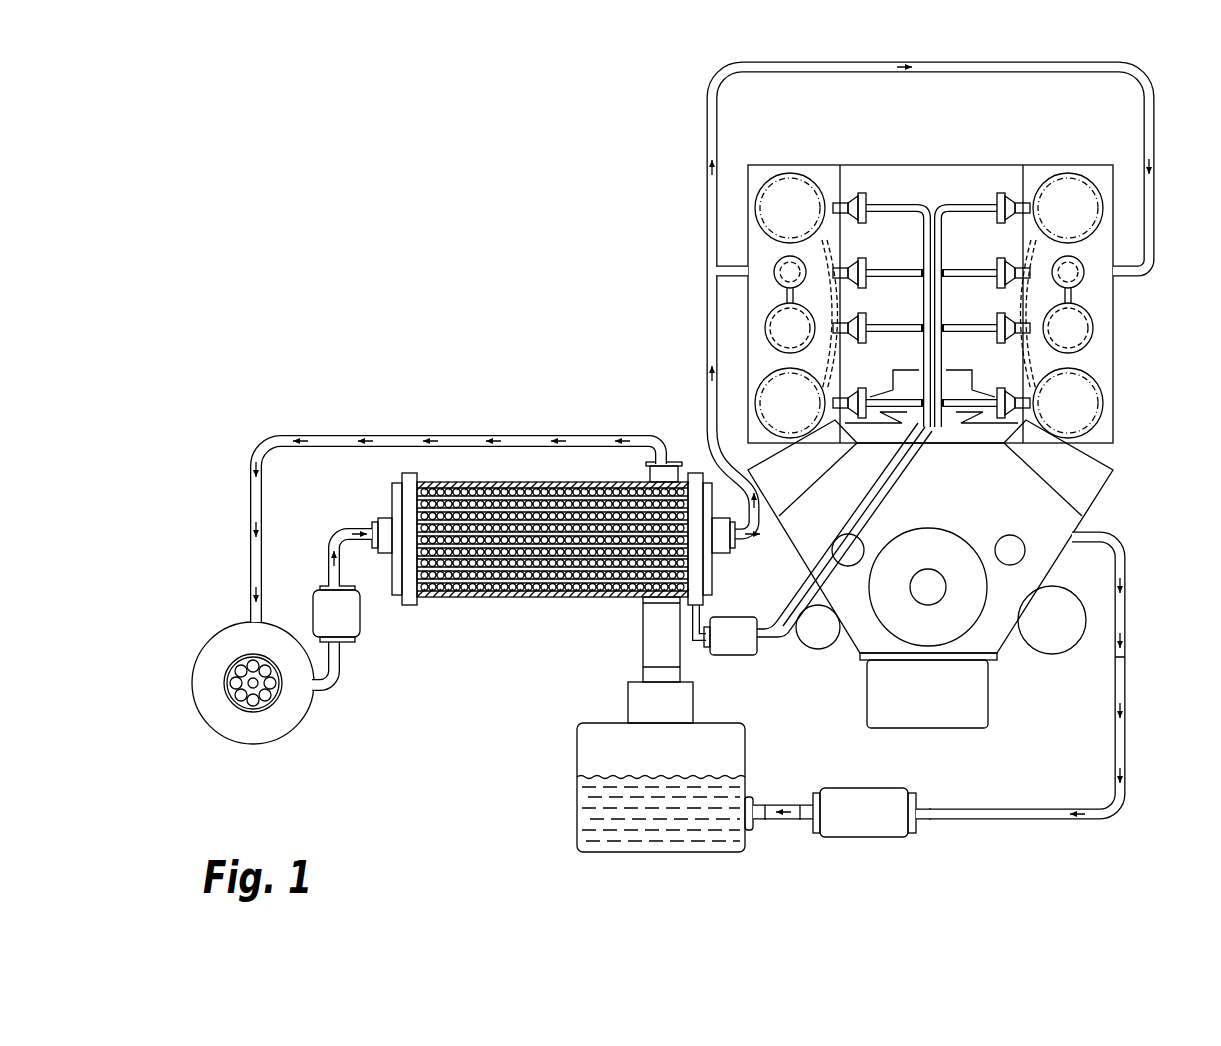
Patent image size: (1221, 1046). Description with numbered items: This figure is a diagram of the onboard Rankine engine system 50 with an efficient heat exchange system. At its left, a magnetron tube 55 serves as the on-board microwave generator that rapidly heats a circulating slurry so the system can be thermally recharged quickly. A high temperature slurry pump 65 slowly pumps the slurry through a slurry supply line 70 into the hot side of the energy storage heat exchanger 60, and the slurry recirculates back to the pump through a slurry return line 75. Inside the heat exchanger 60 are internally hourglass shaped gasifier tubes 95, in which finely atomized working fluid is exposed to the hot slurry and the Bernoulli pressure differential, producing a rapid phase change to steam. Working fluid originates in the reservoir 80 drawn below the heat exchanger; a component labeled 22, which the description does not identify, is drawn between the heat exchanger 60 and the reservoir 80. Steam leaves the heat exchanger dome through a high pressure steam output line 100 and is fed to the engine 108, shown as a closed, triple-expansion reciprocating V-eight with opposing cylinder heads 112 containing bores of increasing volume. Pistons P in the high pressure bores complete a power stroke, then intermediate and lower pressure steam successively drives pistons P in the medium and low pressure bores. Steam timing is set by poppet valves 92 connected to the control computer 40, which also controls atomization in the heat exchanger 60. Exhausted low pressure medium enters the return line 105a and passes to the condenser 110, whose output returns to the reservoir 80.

The onboard system 50 is at (591, 143).
The cylinder head 112 is at (770, 172).
The pistons P is at (808, 178).
The poppet valves 92 is at (862, 192).
The engine 108 is at (982, 502).
The high pressure steam output line 100 is at (766, 545).
The control computer 40 is at (730, 656).
The energy storage heat exchanger 60 is at (509, 621).
The gasifier tube 95 is at (550, 578).
The magnetron tube 55 is at (246, 668).
The slurry return line 75 is at (460, 434).
The high temperature slurry pump 65 is at (362, 618).
The slurry supply line 70 is at (346, 530).
The fuel tank outlet fitting 22 is at (628, 701).
The reservoir 80 is at (586, 748).
The condenser 110 is at (860, 838).
The return line 105a is at (1125, 613).